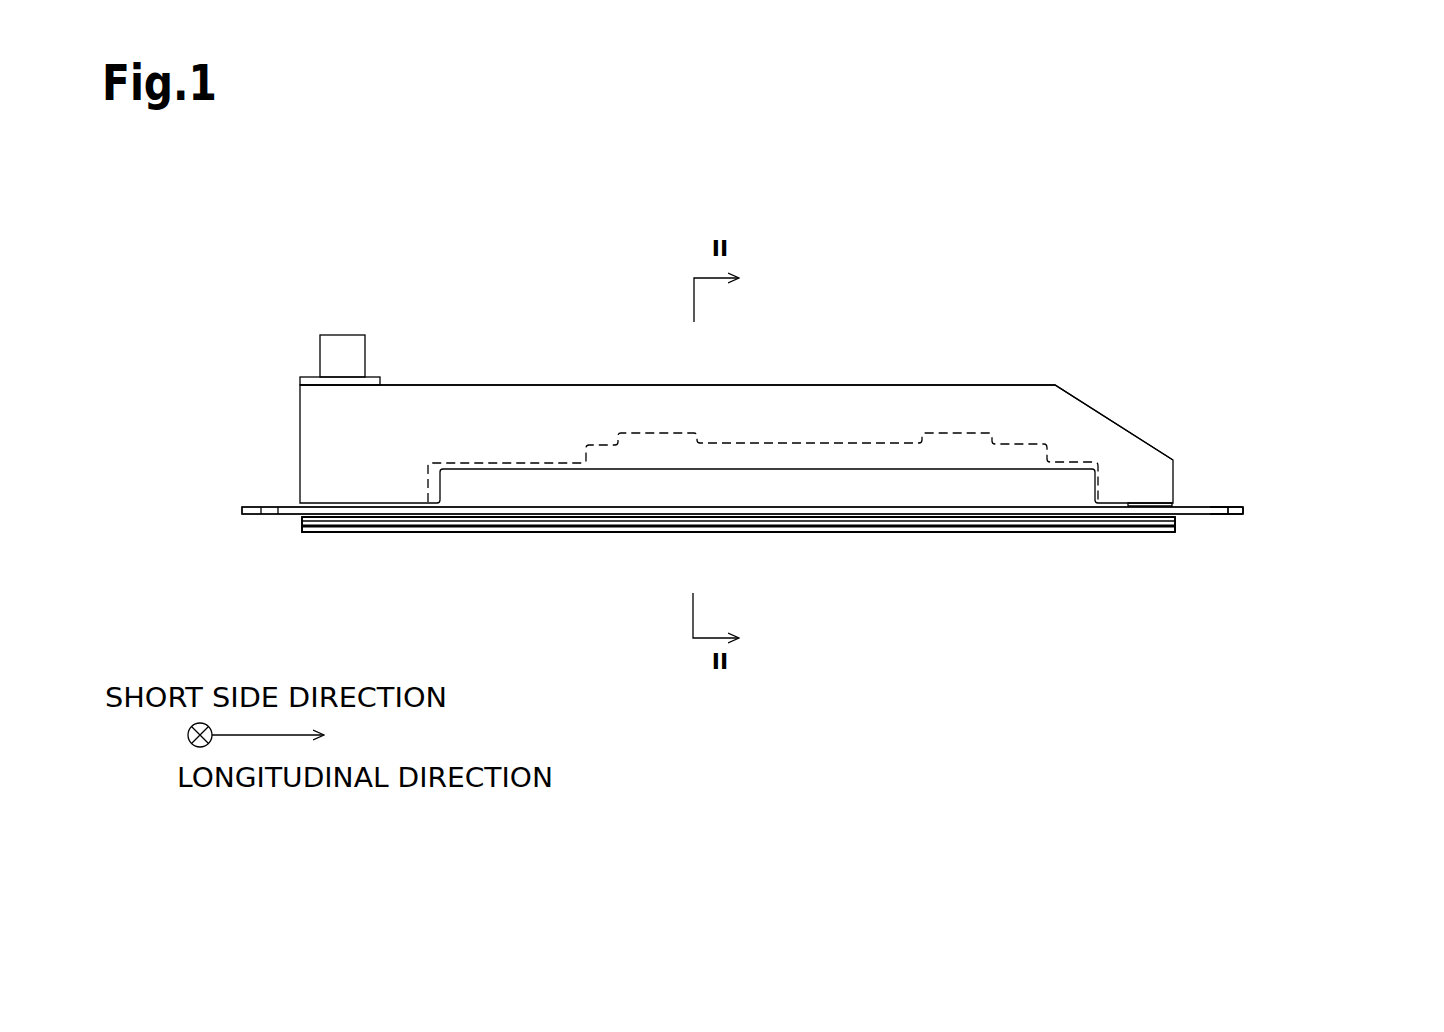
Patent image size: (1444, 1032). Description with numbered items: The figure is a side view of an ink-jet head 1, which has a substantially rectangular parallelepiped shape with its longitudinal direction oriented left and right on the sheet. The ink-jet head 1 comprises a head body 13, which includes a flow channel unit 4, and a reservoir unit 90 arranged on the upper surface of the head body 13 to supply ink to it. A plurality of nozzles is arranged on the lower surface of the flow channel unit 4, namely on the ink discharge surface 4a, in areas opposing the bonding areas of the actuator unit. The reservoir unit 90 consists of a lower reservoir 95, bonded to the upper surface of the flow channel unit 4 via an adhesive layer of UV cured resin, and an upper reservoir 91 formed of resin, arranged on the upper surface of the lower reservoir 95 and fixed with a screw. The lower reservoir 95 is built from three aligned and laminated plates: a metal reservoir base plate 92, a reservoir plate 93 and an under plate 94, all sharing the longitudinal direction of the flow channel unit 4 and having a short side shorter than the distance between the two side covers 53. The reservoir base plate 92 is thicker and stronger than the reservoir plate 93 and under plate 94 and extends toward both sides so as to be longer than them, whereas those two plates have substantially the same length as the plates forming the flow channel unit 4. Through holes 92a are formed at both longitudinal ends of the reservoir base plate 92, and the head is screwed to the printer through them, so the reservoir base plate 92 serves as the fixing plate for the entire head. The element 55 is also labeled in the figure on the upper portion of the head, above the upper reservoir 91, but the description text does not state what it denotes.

The ink-jet head 1 is at (1172, 353).
The flow channel unit 4 is at (1167, 533).
The ink discharge surface 4a is at (886, 533).
The head body 13 is at (1114, 551).
The side cover 53 is at (770, 492).
The cover 55 is at (870, 398).
The reservoir unit 90 is at (1372, 420).
The upper reservoir 91 is at (1153, 503).
The reservoir base plate 92 is at (1243, 508).
The through hole 92a is at (1216, 503).
The reservoir plate 93 is at (1177, 516).
The under plate 94 is at (1175, 523).
The lower reservoir 95 is at (1322, 473).